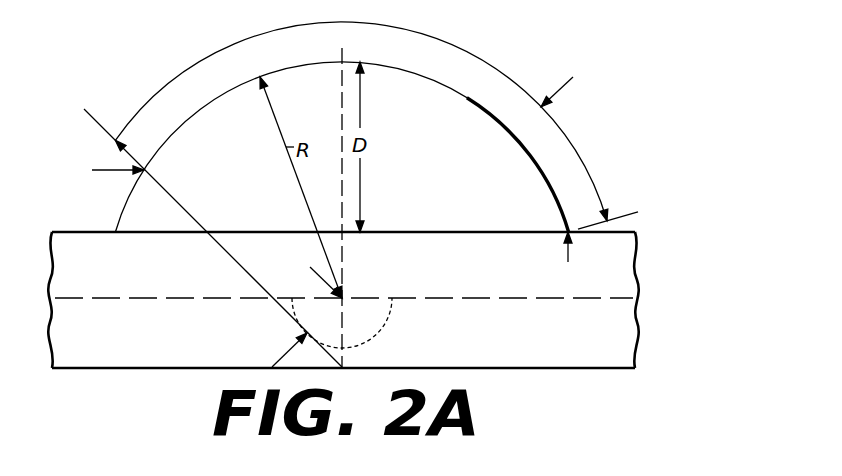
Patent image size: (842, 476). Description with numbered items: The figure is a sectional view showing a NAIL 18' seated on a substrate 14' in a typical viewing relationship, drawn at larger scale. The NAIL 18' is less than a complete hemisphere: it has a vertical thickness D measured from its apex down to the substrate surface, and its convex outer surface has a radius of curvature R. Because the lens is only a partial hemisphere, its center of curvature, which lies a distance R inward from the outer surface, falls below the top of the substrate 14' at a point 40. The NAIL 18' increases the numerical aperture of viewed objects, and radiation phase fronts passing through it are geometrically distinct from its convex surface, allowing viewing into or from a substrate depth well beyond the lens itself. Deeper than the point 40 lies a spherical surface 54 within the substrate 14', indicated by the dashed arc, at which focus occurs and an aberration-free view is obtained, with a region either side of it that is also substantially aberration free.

The substrate 14' is at (380, 300).
The NAIL 18' is at (341, 135).
The point 40 is at (346, 293).
The spherical surface 54 is at (378, 330).